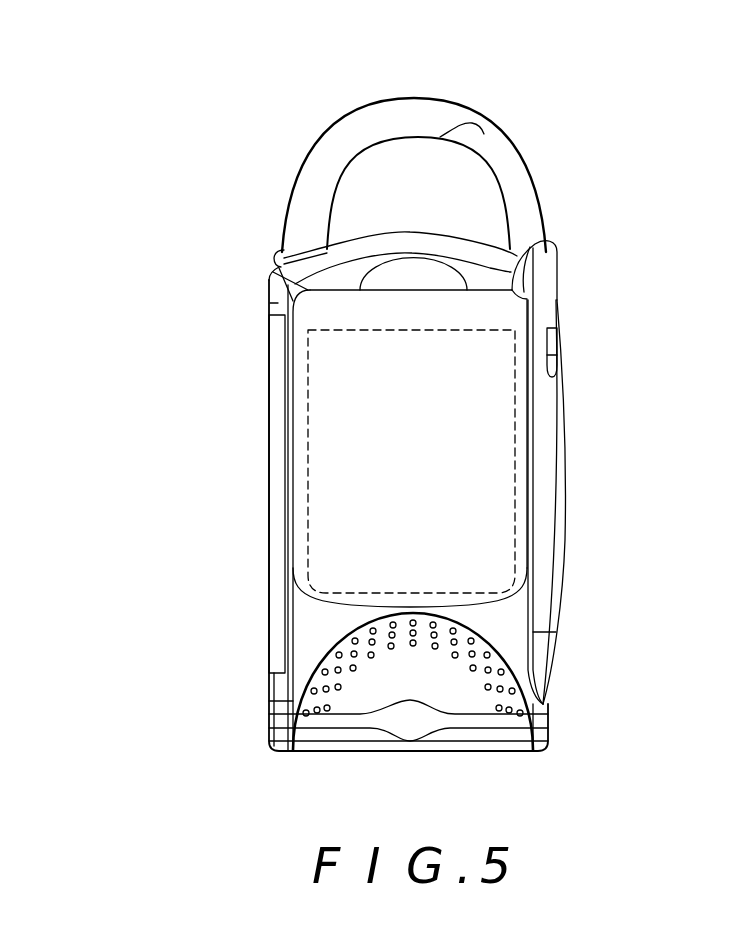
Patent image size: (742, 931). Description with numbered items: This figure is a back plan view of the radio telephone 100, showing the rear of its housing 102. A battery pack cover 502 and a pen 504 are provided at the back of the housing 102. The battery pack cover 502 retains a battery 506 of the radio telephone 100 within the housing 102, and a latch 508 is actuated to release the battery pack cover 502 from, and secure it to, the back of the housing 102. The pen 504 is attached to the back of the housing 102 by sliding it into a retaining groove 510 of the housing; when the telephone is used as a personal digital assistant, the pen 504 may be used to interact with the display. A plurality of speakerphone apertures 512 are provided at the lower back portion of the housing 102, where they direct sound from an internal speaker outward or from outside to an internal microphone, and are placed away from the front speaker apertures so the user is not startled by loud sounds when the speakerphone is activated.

The radio telephone 100 is at (213, 177).
The housing 102 is at (622, 466).
The battery pack cover 502 is at (307, 313).
The pen 504 is at (545, 528).
The battery 506 is at (307, 409).
The latch 508 is at (412, 273).
The retaining groove 510 is at (527, 300).
The speakerphone apertures 512 is at (380, 680).